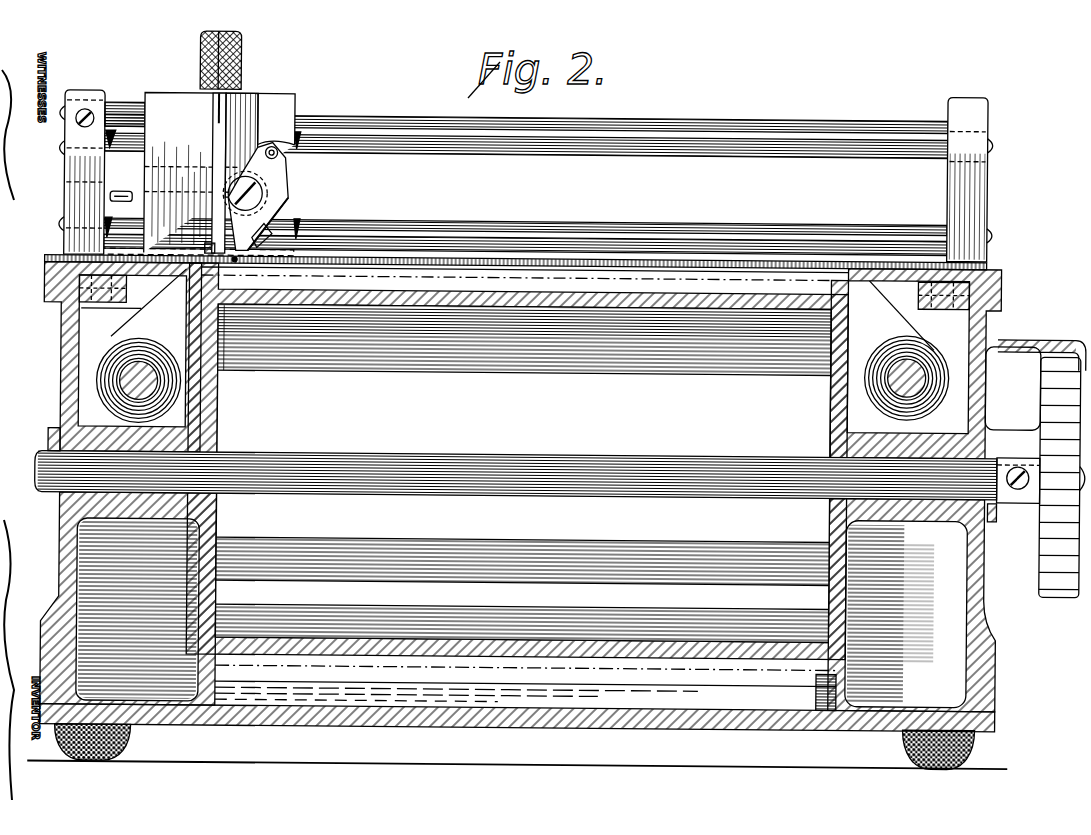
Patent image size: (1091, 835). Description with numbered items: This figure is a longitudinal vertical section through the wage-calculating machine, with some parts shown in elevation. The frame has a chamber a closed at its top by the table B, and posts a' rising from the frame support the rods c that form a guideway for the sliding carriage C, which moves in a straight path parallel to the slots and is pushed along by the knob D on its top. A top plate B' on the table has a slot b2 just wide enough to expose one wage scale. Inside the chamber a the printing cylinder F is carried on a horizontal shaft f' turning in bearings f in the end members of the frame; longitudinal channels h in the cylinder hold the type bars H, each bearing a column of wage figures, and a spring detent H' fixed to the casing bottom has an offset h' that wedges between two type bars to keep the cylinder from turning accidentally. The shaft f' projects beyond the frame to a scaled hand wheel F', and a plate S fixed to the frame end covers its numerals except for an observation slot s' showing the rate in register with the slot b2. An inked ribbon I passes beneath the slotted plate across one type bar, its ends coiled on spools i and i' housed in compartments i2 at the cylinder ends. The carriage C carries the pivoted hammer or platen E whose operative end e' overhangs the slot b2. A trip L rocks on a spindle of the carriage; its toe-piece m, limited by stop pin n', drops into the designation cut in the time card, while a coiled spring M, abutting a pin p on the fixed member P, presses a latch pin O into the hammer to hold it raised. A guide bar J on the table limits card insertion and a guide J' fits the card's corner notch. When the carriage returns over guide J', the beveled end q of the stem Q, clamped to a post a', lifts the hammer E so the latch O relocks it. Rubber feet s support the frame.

The chamber a is at (518, 612).
The posts a' is at (521, 175).
The table B is at (105, 341).
The plate B' is at (916, 324).
The slot b2 is at (838, 266).
The carriage C is at (158, 96).
The rods c is at (526, 150).
The knob D is at (238, 50).
The platen E is at (178, 189).
The operative end e' is at (197, 226).
The printing cylinder F is at (522, 594).
The operating member F' is at (1040, 477).
The bearings f is at (506, 488).
The shaft f' is at (516, 456).
The type bars H is at (427, 461).
The spring detent H' is at (863, 693).
The longitudinal channels h is at (514, 466).
The offset h' is at (552, 672).
The ribbon I is at (80, 314).
The spool i is at (166, 382).
The spool i' is at (867, 379).
The compartments i2 is at (200, 364).
The guide bar J is at (526, 220).
The guide J' is at (245, 227).
The trip L is at (283, 132).
The coiled spring M is at (285, 216).
The toe-piece m is at (233, 262).
The stop pin n' is at (298, 217).
The latch O is at (238, 126).
The member P is at (274, 152).
The pin p is at (290, 196).
The stem Q is at (128, 108).
The beveled conical end q is at (245, 136).
The plate S is at (1013, 388).
The rubber feet s is at (514, 746).
The observation slot s' is at (1042, 344).
The tray T is at (660, 263).